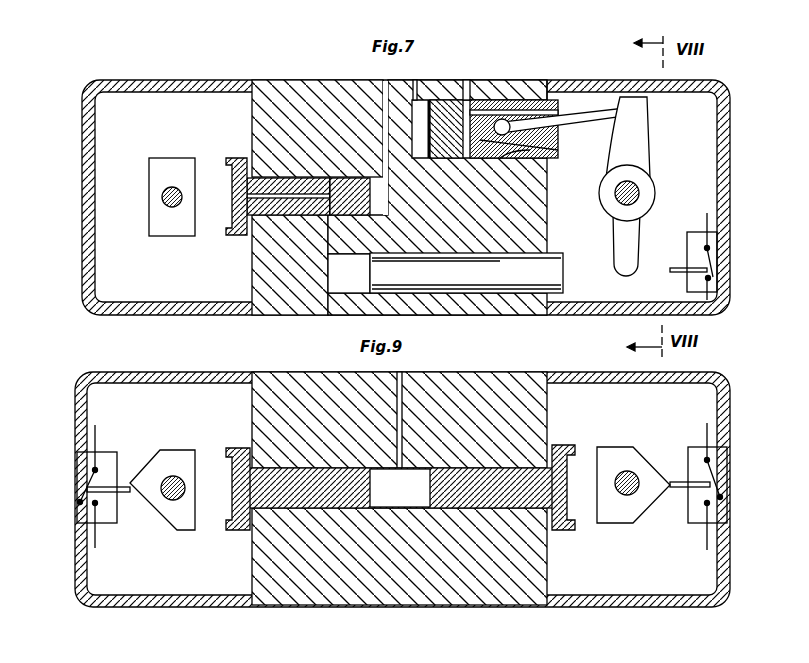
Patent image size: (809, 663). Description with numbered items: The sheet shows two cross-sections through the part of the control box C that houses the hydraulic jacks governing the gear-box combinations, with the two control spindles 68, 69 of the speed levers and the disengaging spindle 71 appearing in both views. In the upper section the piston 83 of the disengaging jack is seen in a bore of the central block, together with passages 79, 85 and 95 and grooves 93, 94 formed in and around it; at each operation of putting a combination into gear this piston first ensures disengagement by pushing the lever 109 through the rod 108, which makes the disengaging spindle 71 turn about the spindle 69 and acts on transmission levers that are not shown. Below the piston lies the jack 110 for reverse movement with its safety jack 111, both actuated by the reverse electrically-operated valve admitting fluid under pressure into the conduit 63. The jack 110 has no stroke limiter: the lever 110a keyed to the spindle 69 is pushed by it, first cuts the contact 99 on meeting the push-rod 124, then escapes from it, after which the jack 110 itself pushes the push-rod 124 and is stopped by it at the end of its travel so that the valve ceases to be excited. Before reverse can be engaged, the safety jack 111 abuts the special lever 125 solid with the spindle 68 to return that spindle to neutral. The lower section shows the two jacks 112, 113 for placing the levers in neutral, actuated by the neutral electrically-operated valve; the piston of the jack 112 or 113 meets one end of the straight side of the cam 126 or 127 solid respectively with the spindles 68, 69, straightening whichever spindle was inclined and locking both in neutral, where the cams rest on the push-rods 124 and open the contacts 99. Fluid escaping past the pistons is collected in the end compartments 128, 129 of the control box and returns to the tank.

In FIG. 7, the control box C is at (282, 79).
In FIG. 9, the control box C is at (283, 371).
In FIG. 7, the conduit 63 is at (387, 79).
In FIG. 7, the passage 79 is at (415, 80).
In FIG. 7, the passage 85 is at (467, 80).
In FIG. 7, the passage 95 is at (549, 85).
In FIG. 7, the rod 108 is at (601, 110).
In FIG. 7, the lever 109 is at (638, 134).
In FIG. 7, the control spindle 69 is at (640, 185).
In FIG. 9, the control spindle 69 is at (636, 471).
In FIG. 7, the disengaging spindle 71 is at (648, 197).
In FIG. 7, the piston of the disengaging jack 83 is at (528, 148).
In FIG. 7, the groove 94 is at (548, 158).
In FIG. 7, the groove 93 is at (520, 172).
In FIG. 7, the jack for reverse movement 110 is at (466, 273).
In FIG. 7, the lever for control of reverse movement 110a is at (620, 240).
In FIG. 7, the push-rod 124 is at (680, 268).
In FIG. 9, the push-rod 124 is at (122, 500).
In FIG. 7, the contact 99 is at (720, 262).
In FIG. 9, the contact 99 is at (77, 485).
In FIG. 7, the end compartment 129 is at (594, 285).
In FIG. 9, the end compartment 129 is at (612, 577).
In FIG. 7, the end compartment 128 is at (119, 271).
In FIG. 9, the end compartment 128 is at (117, 579).
In FIG. 7, the special lever 125 is at (196, 161).
In FIG. 7, the control spindle 68 is at (161, 200).
In FIG. 9, the control spindle 68 is at (161, 486).
In FIG. 7, the safety jack 111 is at (234, 236).
In FIG. 9, the jack for placing levers in neutral position 112 is at (262, 522).
In FIG. 9, the jack for placing levers in neutral position 113 is at (500, 520).
In FIG. 9, the cam 126 is at (178, 458).
In FIG. 9, the cam 127 is at (608, 453).